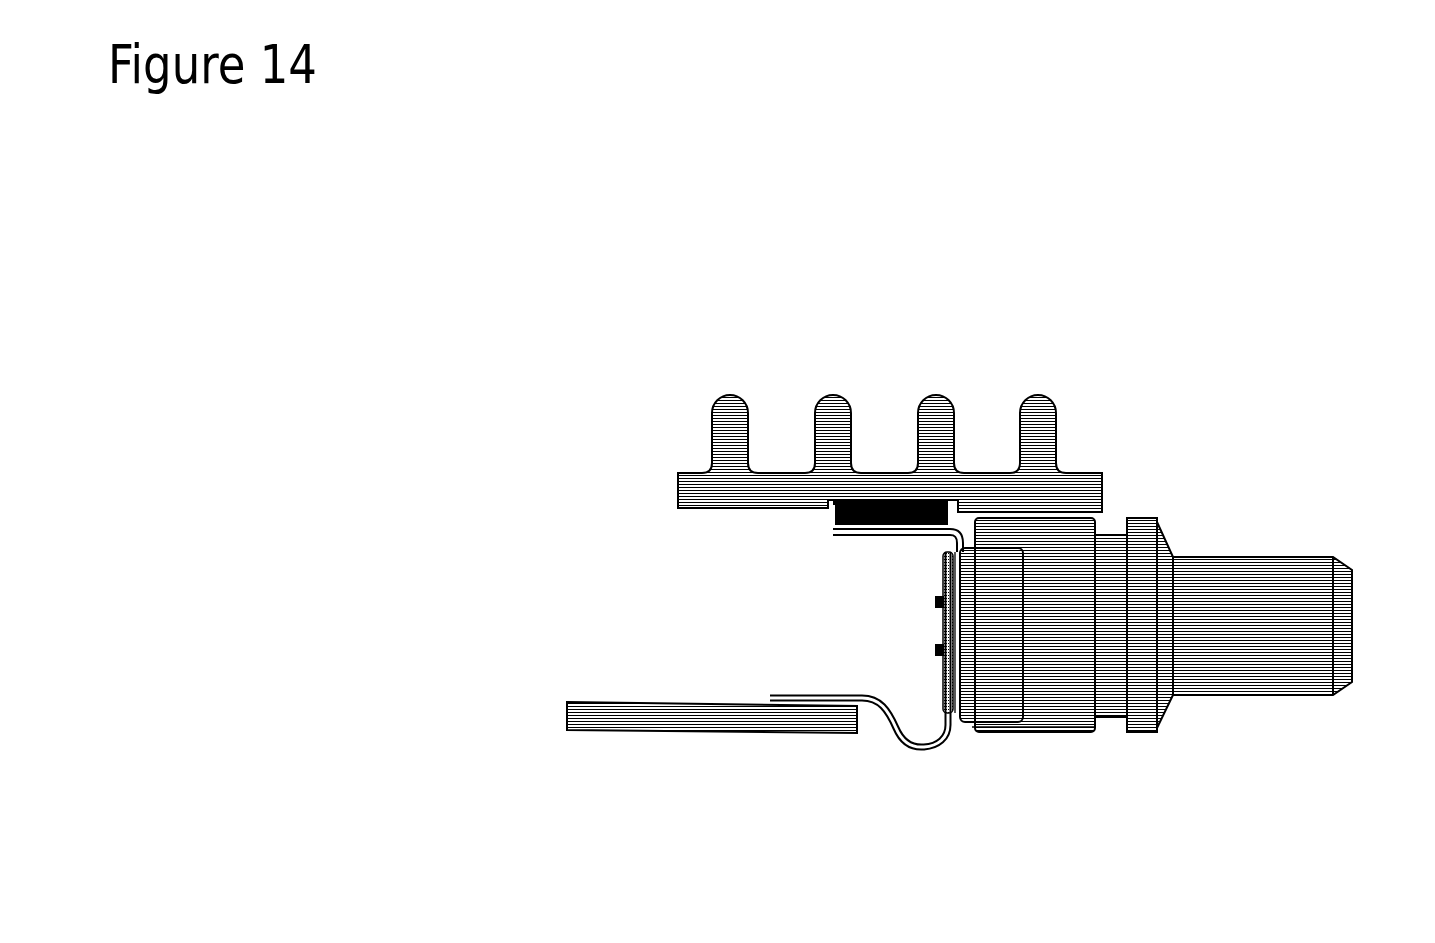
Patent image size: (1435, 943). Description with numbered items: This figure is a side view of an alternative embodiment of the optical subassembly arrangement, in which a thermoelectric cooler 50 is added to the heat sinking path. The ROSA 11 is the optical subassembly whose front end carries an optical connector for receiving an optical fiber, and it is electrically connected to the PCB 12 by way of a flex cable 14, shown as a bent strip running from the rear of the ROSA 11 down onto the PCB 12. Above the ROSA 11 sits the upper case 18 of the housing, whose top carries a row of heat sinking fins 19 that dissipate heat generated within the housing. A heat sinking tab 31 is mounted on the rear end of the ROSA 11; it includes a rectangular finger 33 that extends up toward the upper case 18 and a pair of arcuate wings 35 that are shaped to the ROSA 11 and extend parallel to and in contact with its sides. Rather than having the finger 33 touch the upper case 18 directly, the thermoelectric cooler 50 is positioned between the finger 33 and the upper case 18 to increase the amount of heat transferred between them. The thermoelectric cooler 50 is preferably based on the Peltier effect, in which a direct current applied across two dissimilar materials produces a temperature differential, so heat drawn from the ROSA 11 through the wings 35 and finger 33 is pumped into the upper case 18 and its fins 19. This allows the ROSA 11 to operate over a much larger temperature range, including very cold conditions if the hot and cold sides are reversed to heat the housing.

The ROSA 11 is at (1298, 570).
The PCB 12 is at (567, 732).
The flex cable 14 is at (896, 740).
The upper case 18 is at (832, 396).
The heat sinking fins 19 is at (945, 416).
The heat sinking tab 31 is at (942, 758).
The rectangular finger 33 is at (903, 523).
The arcuate wings 35 is at (985, 673).
The thermoelectric cooler 50 is at (830, 505).